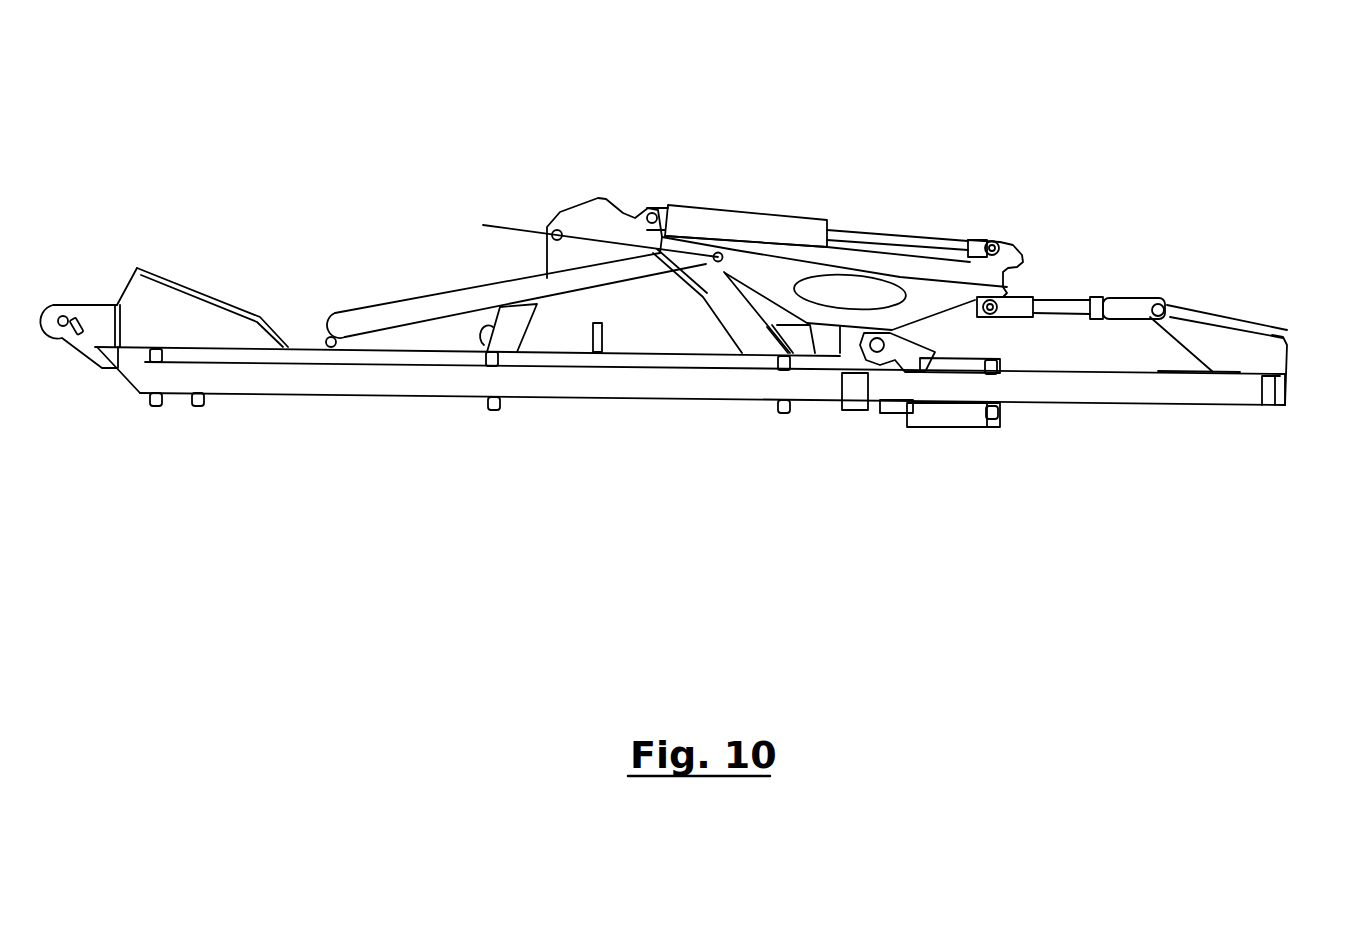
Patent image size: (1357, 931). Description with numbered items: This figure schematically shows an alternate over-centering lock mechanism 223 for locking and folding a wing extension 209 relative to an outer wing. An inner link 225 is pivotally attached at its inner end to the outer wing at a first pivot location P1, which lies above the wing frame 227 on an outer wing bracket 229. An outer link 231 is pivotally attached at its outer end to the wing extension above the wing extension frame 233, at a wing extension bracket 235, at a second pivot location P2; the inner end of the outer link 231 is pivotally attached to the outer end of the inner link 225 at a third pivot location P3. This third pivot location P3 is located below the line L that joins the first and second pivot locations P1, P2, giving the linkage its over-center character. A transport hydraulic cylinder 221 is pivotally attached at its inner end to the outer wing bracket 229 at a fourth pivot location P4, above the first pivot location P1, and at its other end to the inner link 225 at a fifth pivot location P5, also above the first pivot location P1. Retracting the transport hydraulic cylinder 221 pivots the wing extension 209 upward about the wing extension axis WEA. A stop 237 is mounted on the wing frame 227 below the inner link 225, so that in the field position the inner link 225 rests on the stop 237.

The wing extension 209 is at (1202, 406).
The transport hydraulic cylinder 221 is at (782, 205).
The over-centering lock mechanism 223 is at (867, 135).
The inner link 225 is at (888, 257).
The wing frame 227 is at (360, 395).
The outer wing bracket 229 is at (727, 143).
The outer link 231 is at (1110, 320).
The wing extension frame 233 is at (1100, 406).
The wing extension bracket 235 is at (1290, 345).
The stop 237 is at (840, 330).
The first pivot location P1 is at (727, 190).
The second pivot location P2 is at (1165, 300).
The third pivot location P3 is at (993, 314).
The fourth pivot location P4 is at (637, 200).
The fifth pivot location P5 is at (992, 242).
The wing extension axis WEA is at (890, 350).
The line joining the first and second pivot locations L is at (1252, 320).